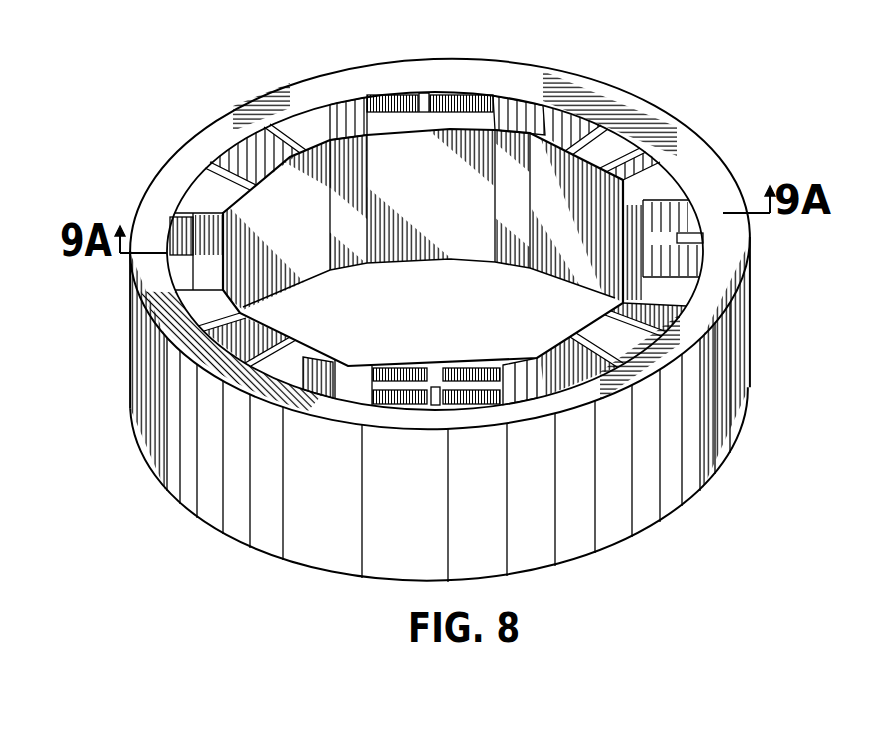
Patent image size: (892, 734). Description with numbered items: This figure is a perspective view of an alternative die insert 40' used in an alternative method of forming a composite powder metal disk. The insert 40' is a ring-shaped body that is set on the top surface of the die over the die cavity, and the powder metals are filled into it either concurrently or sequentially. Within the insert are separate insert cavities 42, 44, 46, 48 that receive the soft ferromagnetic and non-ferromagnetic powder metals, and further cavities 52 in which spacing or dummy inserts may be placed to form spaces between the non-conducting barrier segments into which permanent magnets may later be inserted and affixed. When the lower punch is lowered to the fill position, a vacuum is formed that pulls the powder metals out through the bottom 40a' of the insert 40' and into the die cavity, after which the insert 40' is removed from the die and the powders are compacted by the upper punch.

The alternative die insert 40' is at (442, 297).
The bottom of the insert 40a' is at (439, 494).
The insert cavity 42 is at (429, 283).
The insert cavity 44 is at (590, 122).
The insert cavity 46 is at (525, 100).
The insert cavity 48 is at (426, 92).
The cavities 52 is at (460, 100).